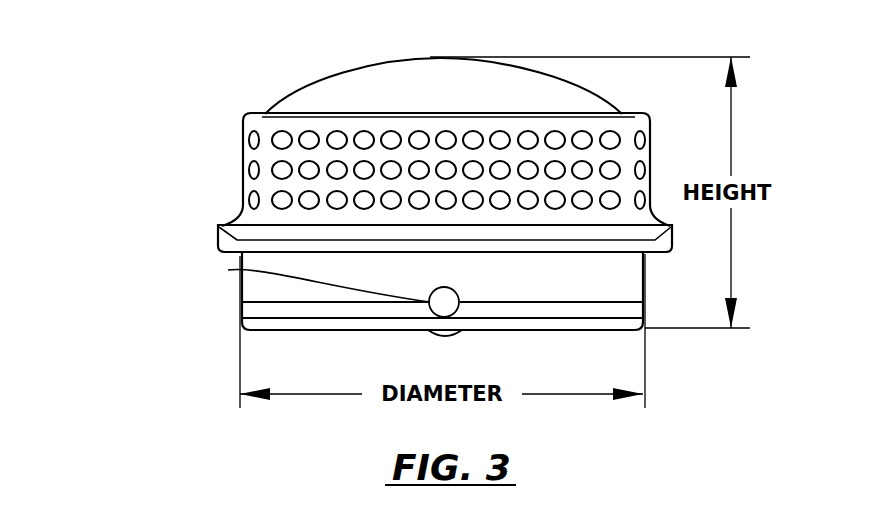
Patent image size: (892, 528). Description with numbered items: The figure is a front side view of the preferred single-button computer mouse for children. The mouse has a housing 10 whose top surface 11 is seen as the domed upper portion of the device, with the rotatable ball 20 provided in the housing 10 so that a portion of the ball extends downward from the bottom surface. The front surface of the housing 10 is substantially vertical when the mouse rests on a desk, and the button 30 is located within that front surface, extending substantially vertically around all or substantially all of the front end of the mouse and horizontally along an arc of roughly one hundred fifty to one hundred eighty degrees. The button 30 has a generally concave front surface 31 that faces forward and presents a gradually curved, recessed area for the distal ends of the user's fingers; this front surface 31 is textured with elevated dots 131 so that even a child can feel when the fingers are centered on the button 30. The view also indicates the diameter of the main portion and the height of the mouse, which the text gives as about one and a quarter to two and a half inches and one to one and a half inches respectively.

The housing 10 is at (312, 52).
The top surface 11 is at (440, 85).
The elevated dots 131 is at (282, 168).
The button 30 is at (270, 187).
The front surface 31 is at (302, 188).
The rotatable ball 20 is at (438, 334).